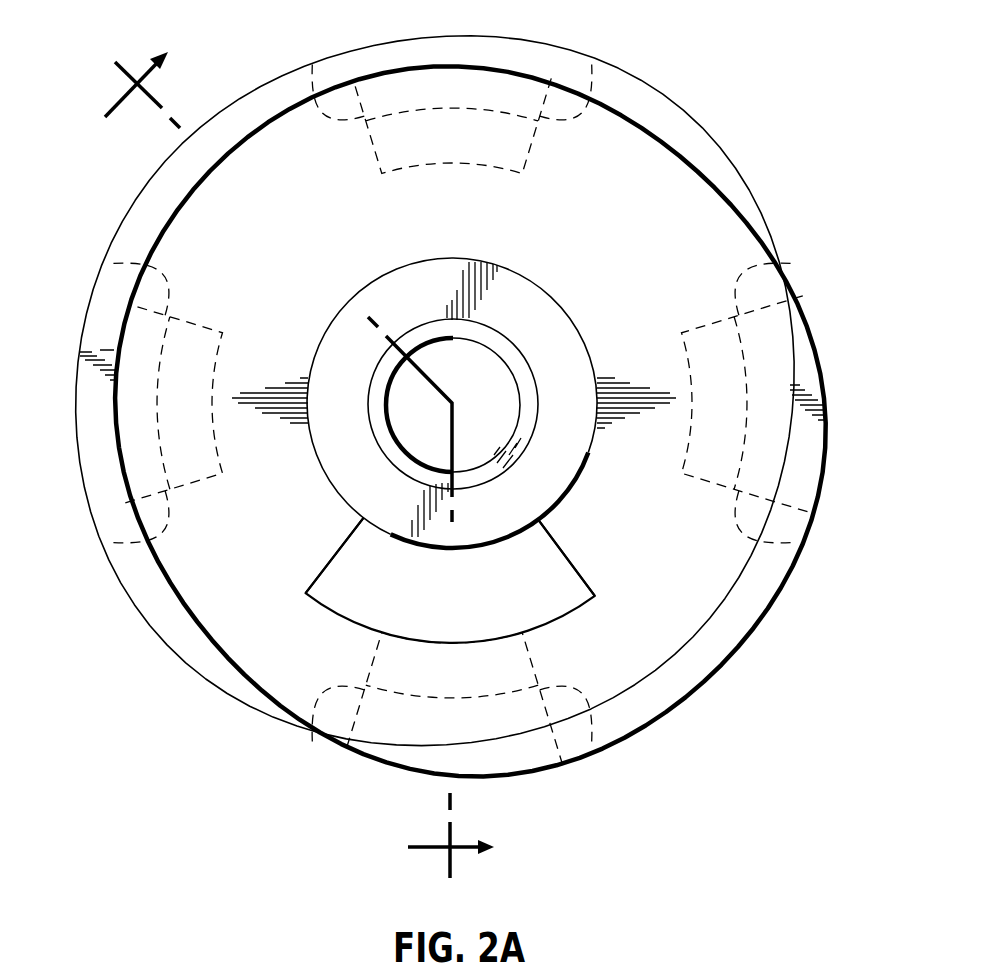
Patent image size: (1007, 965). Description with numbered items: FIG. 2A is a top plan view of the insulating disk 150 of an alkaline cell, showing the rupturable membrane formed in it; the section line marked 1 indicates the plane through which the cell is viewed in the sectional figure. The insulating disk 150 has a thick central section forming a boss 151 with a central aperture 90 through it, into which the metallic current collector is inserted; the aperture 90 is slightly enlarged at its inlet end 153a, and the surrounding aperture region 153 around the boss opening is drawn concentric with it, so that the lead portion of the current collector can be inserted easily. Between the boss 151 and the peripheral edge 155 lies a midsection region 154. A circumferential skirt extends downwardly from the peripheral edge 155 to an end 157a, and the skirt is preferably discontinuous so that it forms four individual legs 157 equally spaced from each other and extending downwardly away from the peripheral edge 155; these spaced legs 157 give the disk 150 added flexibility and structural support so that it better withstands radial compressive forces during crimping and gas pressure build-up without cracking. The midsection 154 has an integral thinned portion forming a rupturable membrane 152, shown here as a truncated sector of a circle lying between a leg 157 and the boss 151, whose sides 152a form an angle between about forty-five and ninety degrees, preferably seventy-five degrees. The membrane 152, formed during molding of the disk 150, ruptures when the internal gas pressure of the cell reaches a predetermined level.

The insulating disk 150 is at (700, 105).
The peripheral edge 155 is at (770, 243).
The legs 157 is at (328, 62).
The end 157a is at (590, 48).
The boss 151 is at (580, 325).
The midsection region 154 is at (277, 374).
The annular bore 153 is at (530, 312).
The inlet end 153a is at (480, 337).
The central aperture 90 is at (433, 350).
The rupturable membrane 152 is at (522, 612).
The sides 152a is at (338, 553).
The section line 1 is at (299, 465).